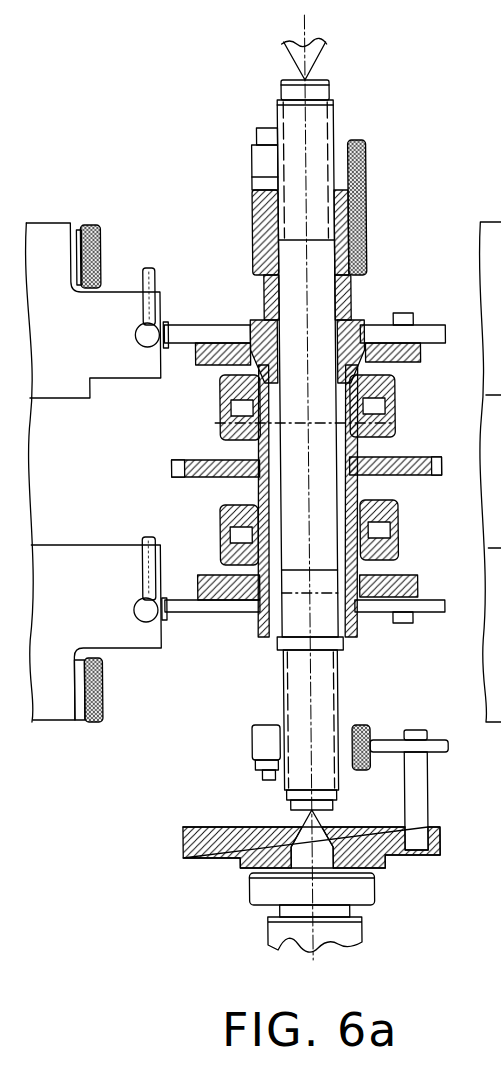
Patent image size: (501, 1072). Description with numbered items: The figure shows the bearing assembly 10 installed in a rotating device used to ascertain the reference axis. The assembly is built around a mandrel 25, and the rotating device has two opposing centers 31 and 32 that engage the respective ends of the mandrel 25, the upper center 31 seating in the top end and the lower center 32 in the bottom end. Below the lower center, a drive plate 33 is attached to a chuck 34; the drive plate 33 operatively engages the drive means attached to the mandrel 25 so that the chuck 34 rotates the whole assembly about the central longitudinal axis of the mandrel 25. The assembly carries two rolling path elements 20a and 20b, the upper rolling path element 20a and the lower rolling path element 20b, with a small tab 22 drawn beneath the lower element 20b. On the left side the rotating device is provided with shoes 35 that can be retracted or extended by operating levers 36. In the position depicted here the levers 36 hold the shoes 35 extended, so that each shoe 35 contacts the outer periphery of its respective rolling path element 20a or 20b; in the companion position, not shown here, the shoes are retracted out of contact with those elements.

The housing sleeve 10 is at (258, 490).
The rolling path element 20a is at (431, 325).
The rolling path element 20b is at (422, 613).
The tab 22 is at (396, 625).
The mandrel 25 is at (324, 262).
The center 31 is at (313, 58).
The center 32 is at (293, 828).
The drive plate 33 is at (433, 845).
The chuck 34 is at (340, 928).
The shoe 35 is at (169, 348).
The lever 36 is at (153, 270).